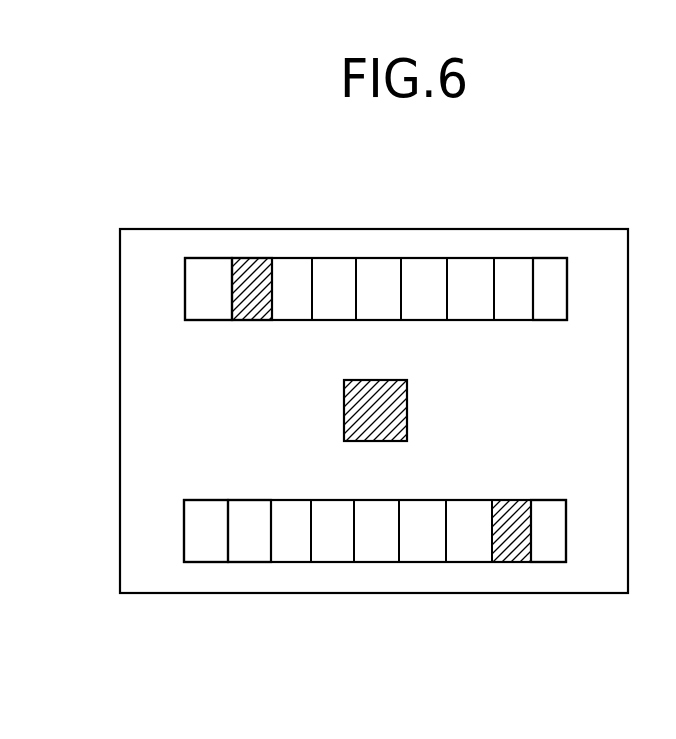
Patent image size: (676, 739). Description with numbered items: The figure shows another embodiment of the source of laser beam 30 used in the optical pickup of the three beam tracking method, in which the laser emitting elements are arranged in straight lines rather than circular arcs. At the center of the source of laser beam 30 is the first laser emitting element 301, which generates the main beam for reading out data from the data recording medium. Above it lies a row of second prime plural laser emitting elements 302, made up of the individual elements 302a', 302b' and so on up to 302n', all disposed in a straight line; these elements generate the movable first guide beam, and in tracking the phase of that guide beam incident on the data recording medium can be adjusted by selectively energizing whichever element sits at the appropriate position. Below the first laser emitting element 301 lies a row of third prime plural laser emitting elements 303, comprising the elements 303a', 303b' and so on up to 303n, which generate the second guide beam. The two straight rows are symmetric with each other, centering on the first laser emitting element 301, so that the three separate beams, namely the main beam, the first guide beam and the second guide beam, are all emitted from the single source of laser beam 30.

The source of laser beam 30 is at (486, 219).
The first laser emitting element 301 is at (407, 418).
The second prime plural laser emitting elements 302 is at (386, 258).
The second prime plural laser emitting element 302a' is at (181, 240).
The second prime plural laser emitting element 302b' is at (277, 240).
The second prime plural laser emitting element 302n' is at (600, 248).
The third prime plural laser emitting elements 303 is at (388, 563).
The third prime plural laser emitting element 303a' is at (188, 486).
The third prime plural laser emitting element 303b' is at (278, 500).
The third plural laser emitting element 303n is at (553, 507).